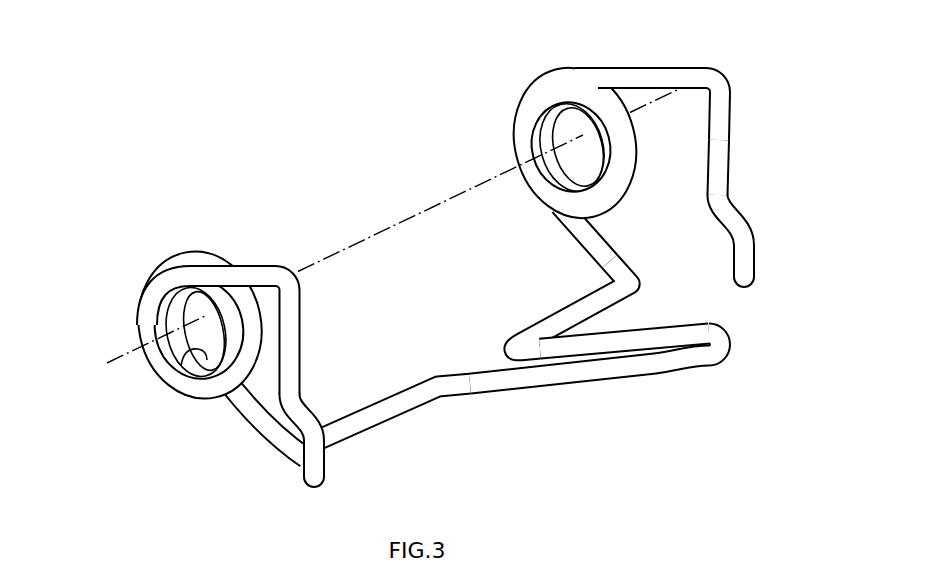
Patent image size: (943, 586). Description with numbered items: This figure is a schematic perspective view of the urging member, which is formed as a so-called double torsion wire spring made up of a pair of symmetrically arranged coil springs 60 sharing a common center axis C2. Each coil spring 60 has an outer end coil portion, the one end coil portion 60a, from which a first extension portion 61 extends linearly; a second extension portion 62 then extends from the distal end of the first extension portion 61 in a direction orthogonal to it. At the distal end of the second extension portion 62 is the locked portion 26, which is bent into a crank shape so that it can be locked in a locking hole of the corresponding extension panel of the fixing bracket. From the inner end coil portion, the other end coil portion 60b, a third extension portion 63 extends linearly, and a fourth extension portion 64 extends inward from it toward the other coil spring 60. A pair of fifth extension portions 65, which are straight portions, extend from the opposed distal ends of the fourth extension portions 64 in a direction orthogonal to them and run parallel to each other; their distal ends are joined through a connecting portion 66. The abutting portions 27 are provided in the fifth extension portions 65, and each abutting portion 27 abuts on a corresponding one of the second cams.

The coil spring 60 is at (432, 254).
The one end coil portion 60a is at (139, 300).
The other end coil portion 60b is at (181, 366).
The first extension portion 61 is at (253, 270).
The second extension portion 62 is at (300, 337).
The third extension portion 63 is at (255, 420).
The fourth extension portion 64 is at (364, 417).
The fifth extension portion 65 is at (532, 385).
The connecting portion 66 is at (697, 353).
The locked portion 26 is at (326, 483).
The abutting portion 27 is at (595, 367).
The center axis C2 is at (373, 233).